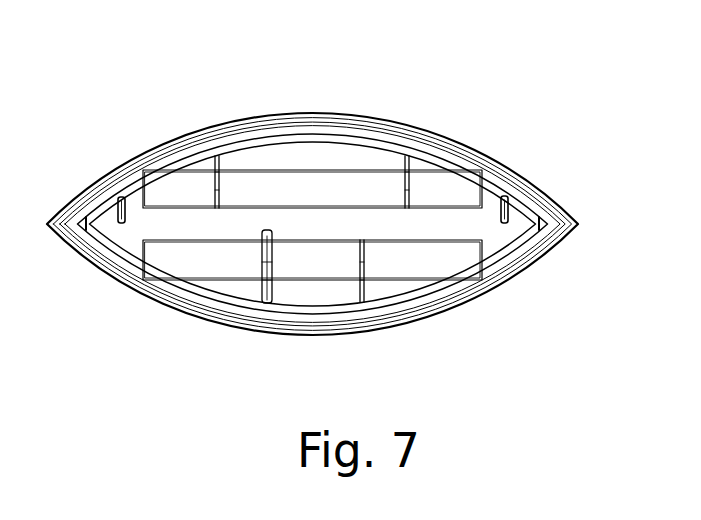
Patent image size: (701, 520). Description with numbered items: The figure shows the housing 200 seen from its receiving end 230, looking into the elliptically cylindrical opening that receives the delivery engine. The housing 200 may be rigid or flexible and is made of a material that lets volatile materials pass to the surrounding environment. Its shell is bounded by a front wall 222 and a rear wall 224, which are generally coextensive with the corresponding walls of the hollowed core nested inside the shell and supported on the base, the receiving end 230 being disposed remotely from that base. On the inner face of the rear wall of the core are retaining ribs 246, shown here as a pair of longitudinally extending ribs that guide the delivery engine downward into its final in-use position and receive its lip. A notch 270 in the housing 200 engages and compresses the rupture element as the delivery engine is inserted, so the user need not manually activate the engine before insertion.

The housing 200 is at (472, 112).
The front wall 222 is at (440, 318).
The rear wall 224 is at (345, 113).
The receiving end 230 is at (478, 227).
The retaining ribs 246 is at (118, 197).
The notch 270 is at (262, 275).